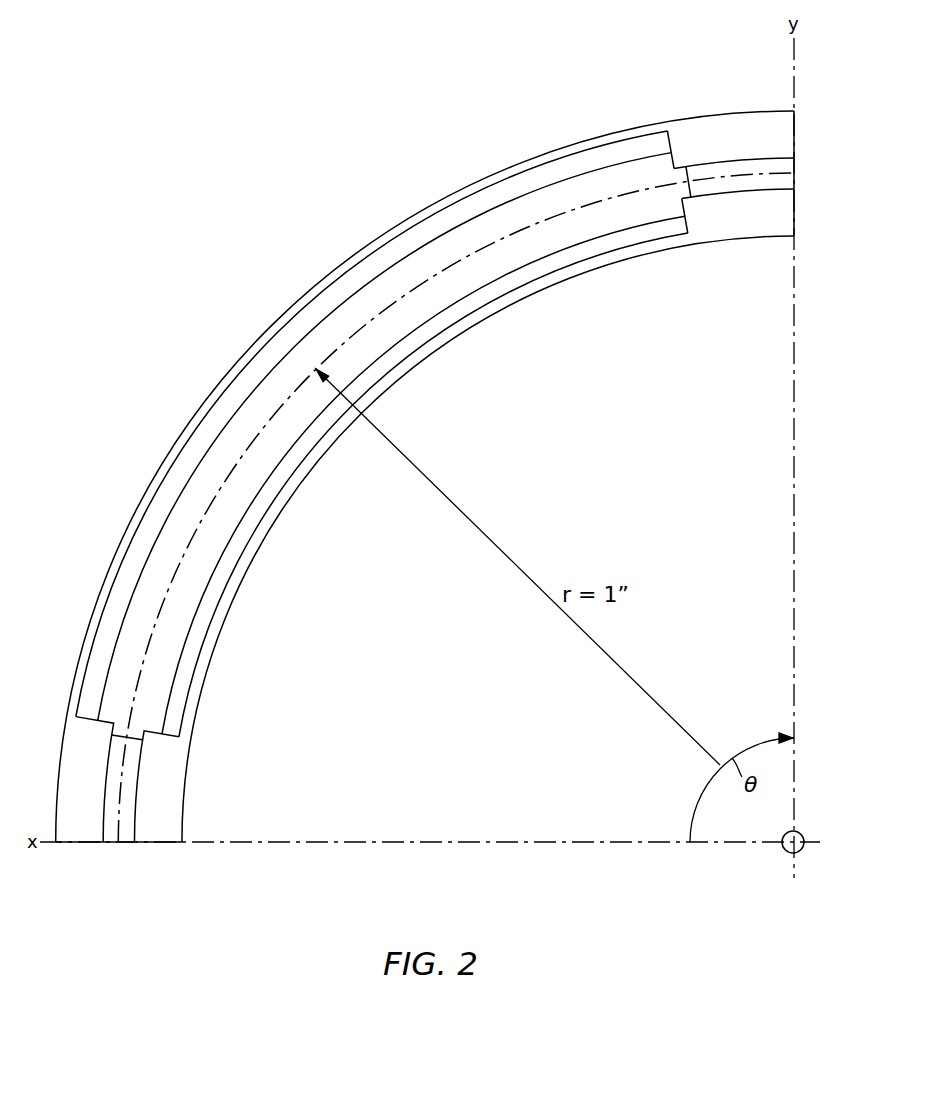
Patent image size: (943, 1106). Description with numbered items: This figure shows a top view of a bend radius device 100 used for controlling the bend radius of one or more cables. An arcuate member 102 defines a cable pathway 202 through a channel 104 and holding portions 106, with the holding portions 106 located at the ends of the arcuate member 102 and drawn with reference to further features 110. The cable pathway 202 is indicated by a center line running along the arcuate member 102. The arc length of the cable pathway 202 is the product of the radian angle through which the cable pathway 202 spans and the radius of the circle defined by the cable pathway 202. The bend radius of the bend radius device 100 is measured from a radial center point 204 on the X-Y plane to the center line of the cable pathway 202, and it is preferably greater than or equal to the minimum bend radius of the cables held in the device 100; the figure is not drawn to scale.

The bend radius device 100 is at (410, 187).
The arcuate member 102 is at (633, 257).
The channel 104 is at (100, 593).
The holding portions 106 is at (795, 77).
The end pieces 110 is at (790, 220).
The cable pathway 202 is at (433, 277).
The radial center point 204 is at (782, 851).